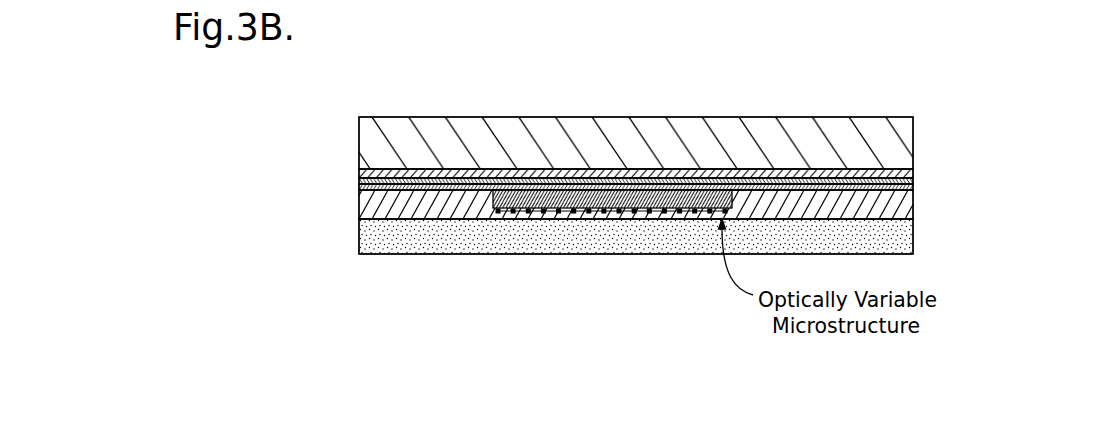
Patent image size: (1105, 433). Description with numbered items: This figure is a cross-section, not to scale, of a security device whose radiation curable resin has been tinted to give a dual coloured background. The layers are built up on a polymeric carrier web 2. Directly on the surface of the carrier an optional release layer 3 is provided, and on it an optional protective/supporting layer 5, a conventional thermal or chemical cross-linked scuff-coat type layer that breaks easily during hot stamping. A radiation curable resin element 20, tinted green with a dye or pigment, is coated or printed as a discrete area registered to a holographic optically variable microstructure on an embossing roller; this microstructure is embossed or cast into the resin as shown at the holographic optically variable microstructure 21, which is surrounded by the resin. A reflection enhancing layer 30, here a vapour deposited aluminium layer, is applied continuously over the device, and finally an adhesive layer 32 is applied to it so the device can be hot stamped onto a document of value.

The polymeric carrier web 2 is at (897, 142).
The release layer 3 is at (428, 173).
The protective/supporting layer 5 is at (367, 184).
The radiation curable resin element 20 is at (693, 193).
The holographic optically variable microstructure 21 is at (598, 214).
The reflection enhancing layer 30 is at (409, 200).
The adhesive layer 32 is at (893, 242).